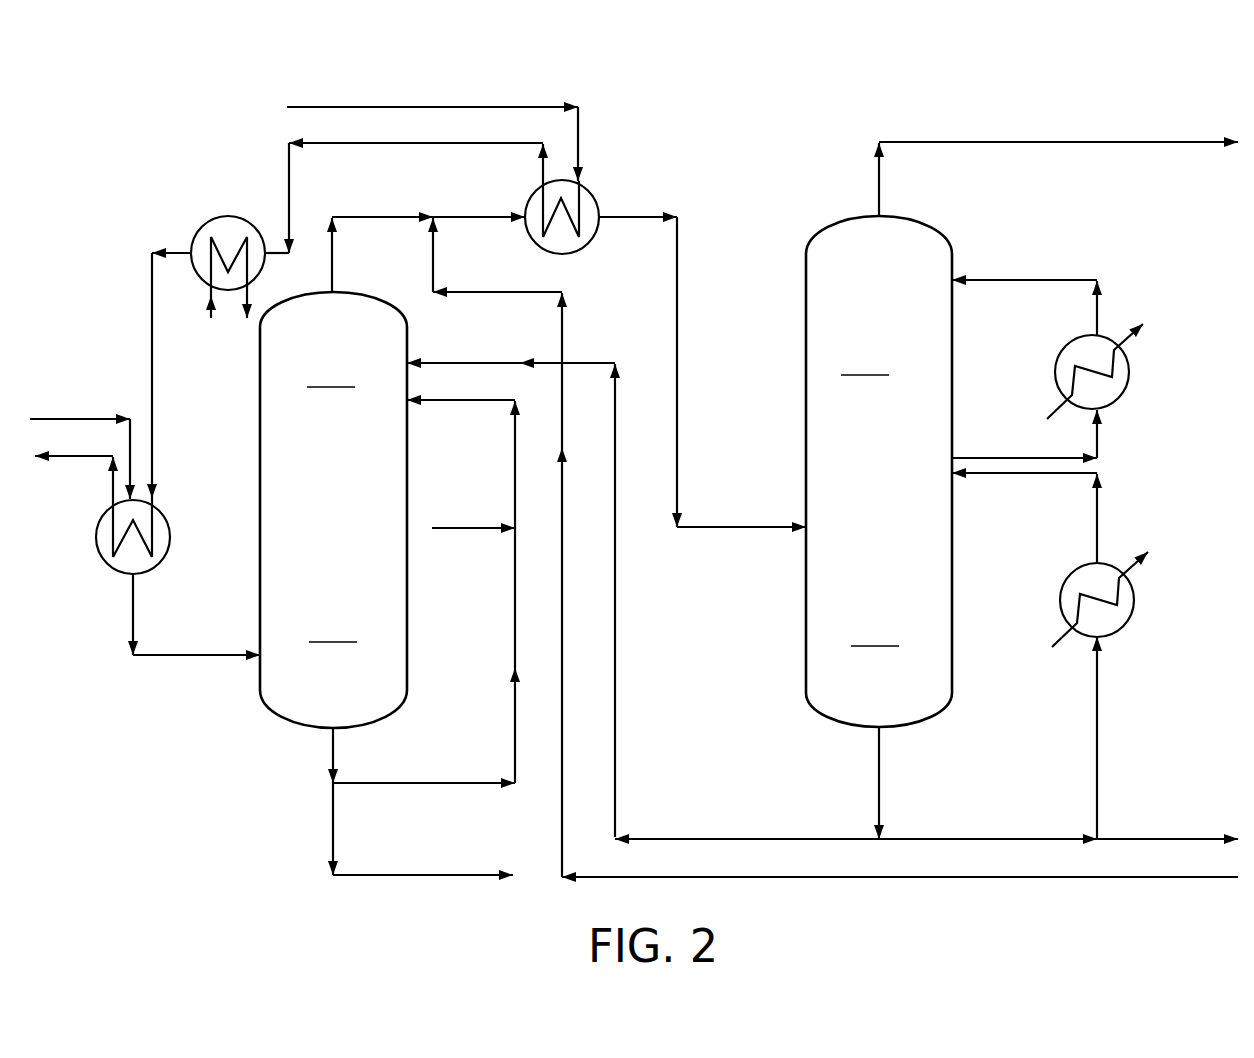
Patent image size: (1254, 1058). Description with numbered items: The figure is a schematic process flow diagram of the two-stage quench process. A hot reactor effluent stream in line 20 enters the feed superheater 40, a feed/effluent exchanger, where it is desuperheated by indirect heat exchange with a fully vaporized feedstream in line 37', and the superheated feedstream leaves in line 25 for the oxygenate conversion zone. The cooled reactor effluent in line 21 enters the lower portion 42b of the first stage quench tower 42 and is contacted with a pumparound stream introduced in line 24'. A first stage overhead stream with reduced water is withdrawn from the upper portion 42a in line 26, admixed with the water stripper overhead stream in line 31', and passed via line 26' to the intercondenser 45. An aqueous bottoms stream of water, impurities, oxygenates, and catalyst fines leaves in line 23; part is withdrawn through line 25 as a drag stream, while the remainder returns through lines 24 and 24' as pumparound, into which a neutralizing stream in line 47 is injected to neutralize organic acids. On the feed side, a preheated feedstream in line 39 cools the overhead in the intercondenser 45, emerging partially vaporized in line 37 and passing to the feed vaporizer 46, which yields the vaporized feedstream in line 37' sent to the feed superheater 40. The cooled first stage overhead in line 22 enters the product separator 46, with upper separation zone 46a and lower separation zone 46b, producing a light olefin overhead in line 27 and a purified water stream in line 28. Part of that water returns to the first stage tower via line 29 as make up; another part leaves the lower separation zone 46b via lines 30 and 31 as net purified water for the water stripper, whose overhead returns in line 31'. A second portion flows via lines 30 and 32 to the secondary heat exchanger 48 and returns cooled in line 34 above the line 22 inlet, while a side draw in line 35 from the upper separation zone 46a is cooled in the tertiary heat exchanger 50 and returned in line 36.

The reactor effluent stream line 20 is at (112, 415).
The cooled reactor effluent stream line 21 is at (148, 654).
The cooled first stage overhead stream line 22 is at (695, 527).
The aqueous stream line 23 is at (332, 756).
The pumparound stream line 24 is at (424, 592).
The pumparound stream inlet line 24' is at (461, 421).
The aqueous waste stream line / superheated feedstream line 25 is at (112, 462).
The first stage overhead stream line 26 is at (382, 254).
The first stage overhead stream line to intercondenser 26' is at (479, 200).
The second-stage overhead stream line 27 is at (1035, 144).
The purified water stream line 28 is at (882, 770).
The quench tower make up stream line 29 is at (617, 625).
The purified water stream withdrawal line 30 is at (925, 838).
The net purified water stream line 31 is at (1167, 821).
The water stripper overhead stream line 31' is at (835, 547).
The first separator pumparound stream line 32 is at (1100, 730).
The first cooled purified water stream line 34 is at (1097, 502).
The side draw stream line 35 is at (1100, 455).
The second separator pumparound stream line 36 is at (1075, 278).
The partially vaporized feedstream line 37 is at (404, 198).
The vaporized feedstream line 37' is at (185, 375).
The preheated feedstream line 39 is at (580, 120).
The feed superheater 40 is at (162, 510).
The first stage quench tower 42 is at (408, 338).
The upper portion of first stage quench tower 42a is at (331, 372).
The lower portion of first stage quench tower 42b is at (333, 627).
The intercondenser 45 is at (588, 245).
The feed vaporizer / second stage tower (product separator) 46 is at (197, 233).
The upper separation zone 46a is at (865, 360).
The lower separation zone 46b is at (875, 631).
The neutralizing stream line 47 is at (485, 523).
The secondary heat exchanger 48 is at (1125, 630).
The tertiary heat exchanger 50 is at (1125, 345).